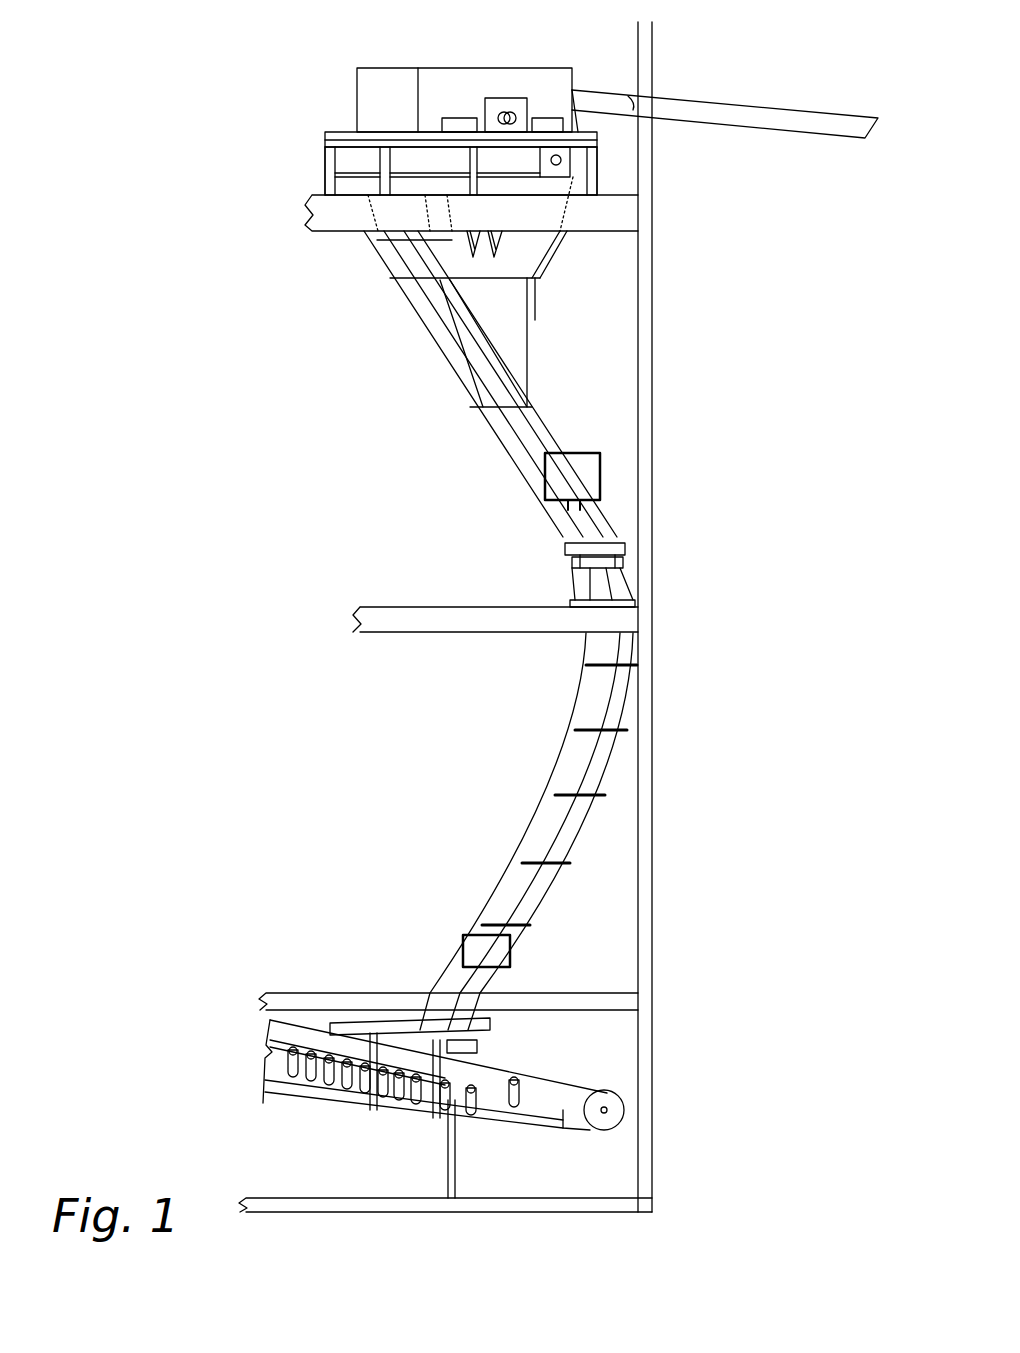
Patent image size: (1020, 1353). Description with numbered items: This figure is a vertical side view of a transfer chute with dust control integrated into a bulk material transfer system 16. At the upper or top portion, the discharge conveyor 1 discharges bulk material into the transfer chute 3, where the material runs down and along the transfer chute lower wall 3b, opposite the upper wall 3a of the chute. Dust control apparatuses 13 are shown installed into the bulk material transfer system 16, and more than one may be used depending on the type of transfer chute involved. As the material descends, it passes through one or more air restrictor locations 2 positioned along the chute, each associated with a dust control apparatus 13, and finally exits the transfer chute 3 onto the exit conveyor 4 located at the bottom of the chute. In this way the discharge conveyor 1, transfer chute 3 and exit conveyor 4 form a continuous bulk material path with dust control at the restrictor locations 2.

The discharge conveyor 1 is at (797, 98).
The air restrictor location 2 is at (552, 583).
The transfer chute 3 is at (482, 447).
The upper wall 3a is at (618, 543).
The lower wall 3b is at (565, 562).
The exit conveyor 4 is at (258, 1057).
The dust control apparatus 13 is at (585, 447).
The bulk material transfer system 16 is at (663, 567).